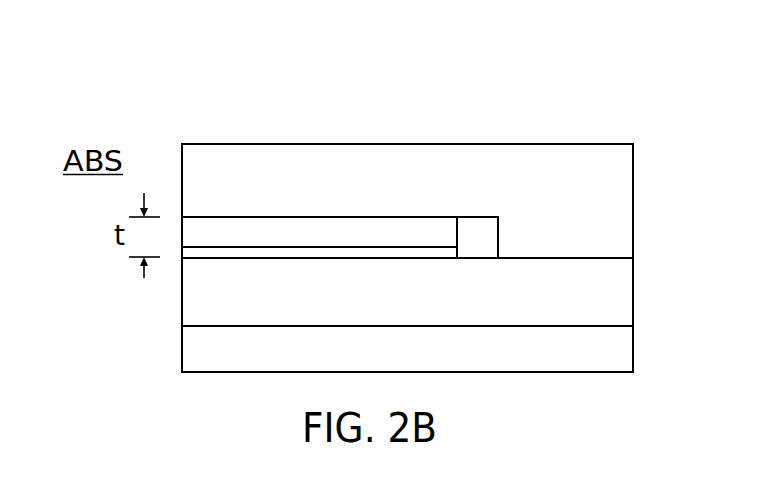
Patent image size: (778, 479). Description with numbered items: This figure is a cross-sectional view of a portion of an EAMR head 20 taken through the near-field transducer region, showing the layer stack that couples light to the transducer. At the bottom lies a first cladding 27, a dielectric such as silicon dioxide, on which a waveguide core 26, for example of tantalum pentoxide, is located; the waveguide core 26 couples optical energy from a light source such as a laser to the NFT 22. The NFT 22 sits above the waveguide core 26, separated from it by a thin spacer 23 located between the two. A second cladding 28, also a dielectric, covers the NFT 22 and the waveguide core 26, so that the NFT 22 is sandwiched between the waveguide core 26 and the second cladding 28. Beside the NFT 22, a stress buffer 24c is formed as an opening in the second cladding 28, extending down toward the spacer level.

The EAMR head 20 is at (578, 98).
The NFT 22 is at (331, 258).
The spacer 23 is at (226, 258).
The stress buffer 24c is at (476, 244).
The waveguide core 26 is at (633, 303).
The first cladding 27 is at (620, 349).
The second cladding 28 is at (633, 200).